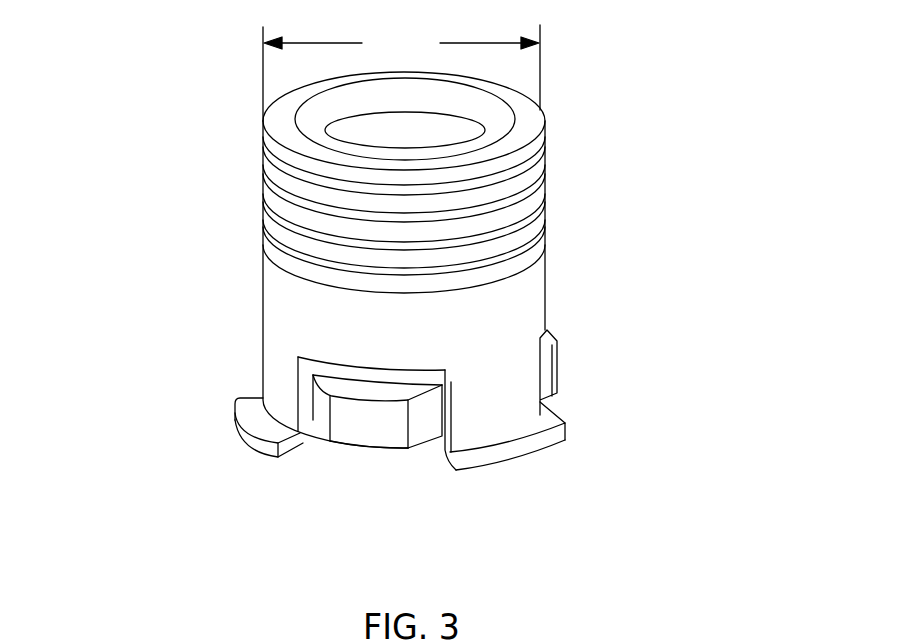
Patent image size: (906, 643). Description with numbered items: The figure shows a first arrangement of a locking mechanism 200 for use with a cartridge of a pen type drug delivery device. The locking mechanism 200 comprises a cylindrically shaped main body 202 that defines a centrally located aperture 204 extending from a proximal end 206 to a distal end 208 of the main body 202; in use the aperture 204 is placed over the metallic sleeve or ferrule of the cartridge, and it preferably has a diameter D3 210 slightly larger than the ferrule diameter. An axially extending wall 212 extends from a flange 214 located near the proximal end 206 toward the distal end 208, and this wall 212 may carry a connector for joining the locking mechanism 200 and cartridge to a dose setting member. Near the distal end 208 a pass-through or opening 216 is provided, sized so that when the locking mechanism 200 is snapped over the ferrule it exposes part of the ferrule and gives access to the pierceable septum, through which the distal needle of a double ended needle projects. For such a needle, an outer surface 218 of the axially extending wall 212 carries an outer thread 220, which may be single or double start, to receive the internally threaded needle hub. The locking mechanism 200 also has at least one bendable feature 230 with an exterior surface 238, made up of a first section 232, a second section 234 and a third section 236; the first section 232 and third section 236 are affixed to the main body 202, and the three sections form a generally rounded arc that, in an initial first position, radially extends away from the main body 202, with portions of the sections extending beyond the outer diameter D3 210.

The locking mechanism 200 is at (429, 304).
The main body 202 is at (275, 323).
The aperture 204 is at (388, 452).
The proximal end 206 is at (555, 447).
The distal end 208 is at (537, 103).
The diameter D3 210 is at (263, 69).
The axially extending wall 212 is at (545, 293).
The flange 214 is at (520, 457).
The pass-through or opening 216 is at (397, 137).
The outer surface 218 is at (287, 297).
The outer thread 220 is at (517, 213).
The bendable feature 230 is at (433, 413).
The first section 232 is at (290, 428).
The second section 234 is at (345, 430).
The third section 236 is at (430, 430).
The exterior surface 238 is at (370, 438).